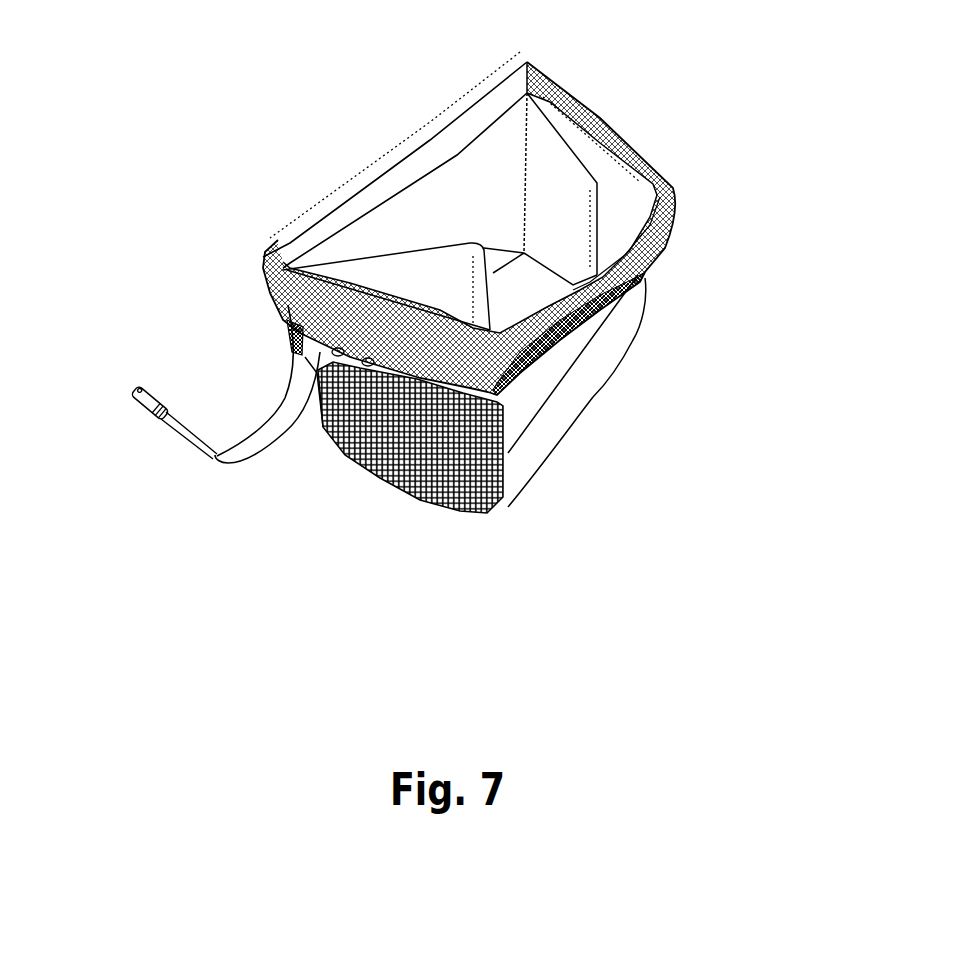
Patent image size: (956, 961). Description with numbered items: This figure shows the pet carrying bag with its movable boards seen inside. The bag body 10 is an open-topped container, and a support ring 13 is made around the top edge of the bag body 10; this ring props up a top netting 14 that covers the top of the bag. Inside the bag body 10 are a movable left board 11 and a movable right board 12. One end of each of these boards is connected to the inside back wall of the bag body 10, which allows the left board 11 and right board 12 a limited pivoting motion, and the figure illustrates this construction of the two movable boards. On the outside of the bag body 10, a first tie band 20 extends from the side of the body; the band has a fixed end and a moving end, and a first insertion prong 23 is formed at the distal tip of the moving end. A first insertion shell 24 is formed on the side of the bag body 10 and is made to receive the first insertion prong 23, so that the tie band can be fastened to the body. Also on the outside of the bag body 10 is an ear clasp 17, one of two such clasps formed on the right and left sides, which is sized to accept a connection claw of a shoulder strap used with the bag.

The bag body 10 is at (586, 398).
The left board 11 is at (558, 177).
The right board 12 is at (398, 270).
The support ring 13 is at (673, 193).
The top netting 14 is at (622, 280).
The ear clasp 17 is at (433, 503).
The first tie band 20 is at (283, 407).
The first insertion prong 23 is at (148, 410).
The first insertion shell 24 is at (322, 430).